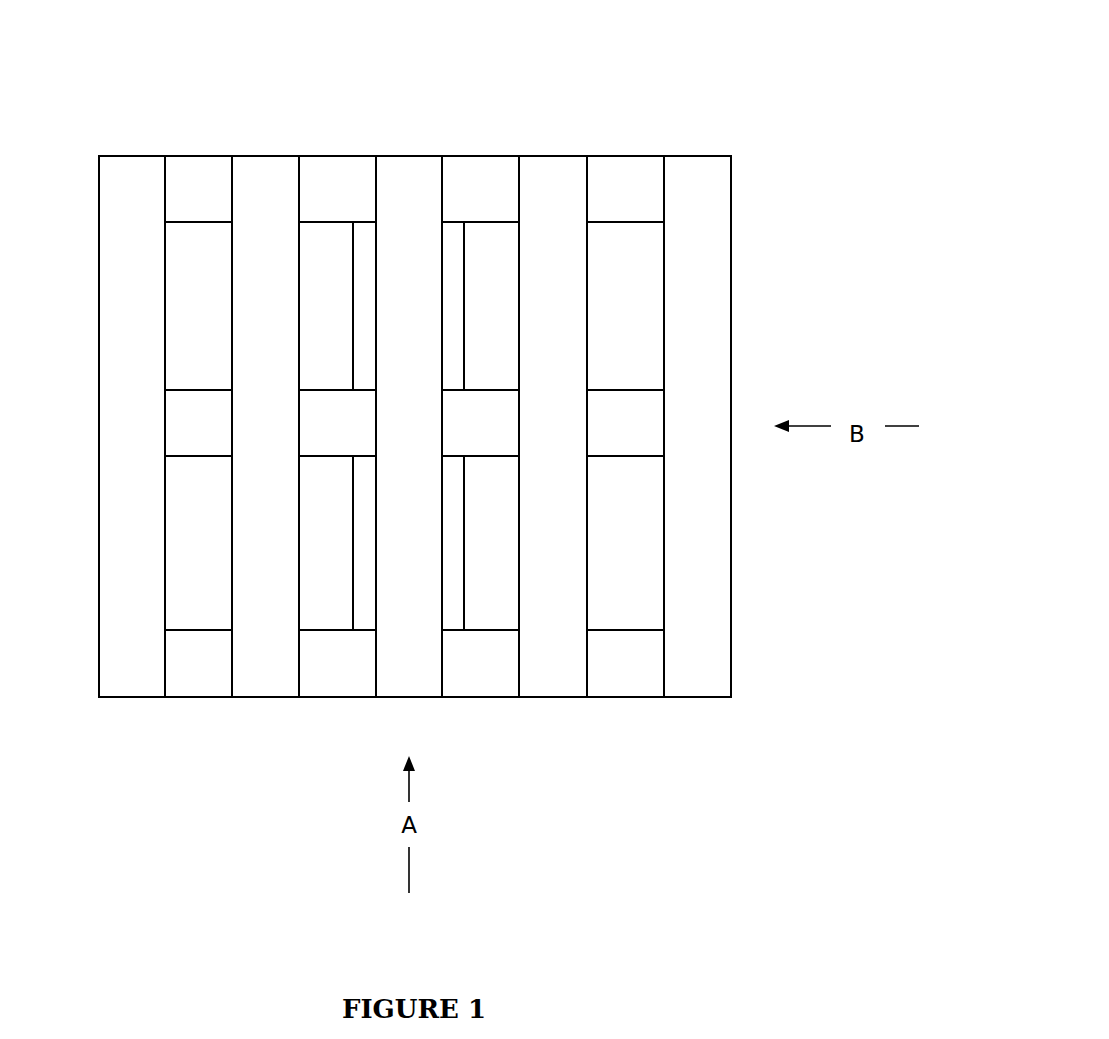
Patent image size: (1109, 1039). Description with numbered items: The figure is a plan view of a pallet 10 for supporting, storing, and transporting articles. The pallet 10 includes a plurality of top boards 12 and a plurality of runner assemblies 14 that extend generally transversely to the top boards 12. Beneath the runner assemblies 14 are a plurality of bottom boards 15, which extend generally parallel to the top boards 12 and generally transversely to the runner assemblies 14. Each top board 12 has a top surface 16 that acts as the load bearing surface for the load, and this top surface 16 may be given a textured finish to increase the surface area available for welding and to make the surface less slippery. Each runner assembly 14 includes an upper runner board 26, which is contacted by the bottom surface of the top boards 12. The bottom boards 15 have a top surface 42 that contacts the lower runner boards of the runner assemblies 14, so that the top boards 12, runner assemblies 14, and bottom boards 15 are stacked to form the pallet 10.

The pallet 10 is at (424, 356).
The top boards 12 is at (292, 193).
The runner assemblies 14 is at (187, 425).
The bottom boards 15 is at (333, 592).
The top surface 16 is at (147, 508).
The upper runner board 26 is at (623, 675).
The top surface 42 is at (346, 508).